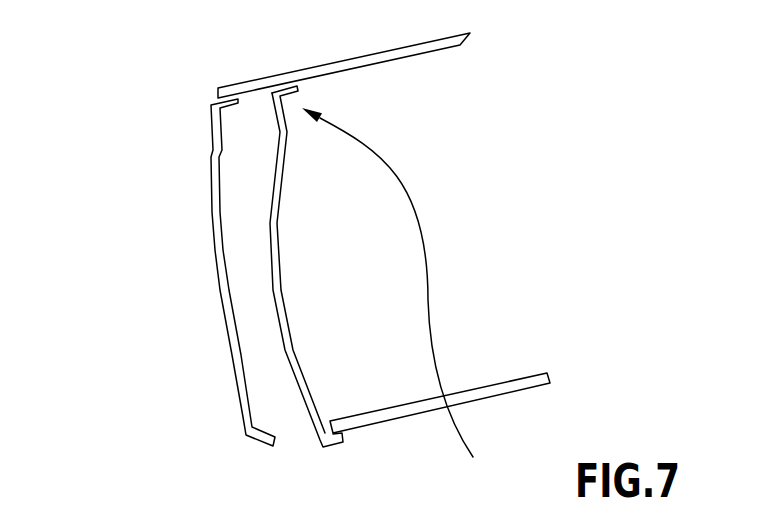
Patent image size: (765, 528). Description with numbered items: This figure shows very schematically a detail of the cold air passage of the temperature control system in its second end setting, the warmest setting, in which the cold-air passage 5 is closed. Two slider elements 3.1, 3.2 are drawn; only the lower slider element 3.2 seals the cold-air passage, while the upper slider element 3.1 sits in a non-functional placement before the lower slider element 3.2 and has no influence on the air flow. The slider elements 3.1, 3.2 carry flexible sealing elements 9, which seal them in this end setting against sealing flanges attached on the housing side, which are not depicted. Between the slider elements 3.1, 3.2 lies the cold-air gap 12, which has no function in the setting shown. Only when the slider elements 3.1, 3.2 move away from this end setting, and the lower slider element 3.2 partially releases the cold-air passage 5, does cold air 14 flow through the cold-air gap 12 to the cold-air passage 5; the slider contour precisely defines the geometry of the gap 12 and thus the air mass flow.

The upper slider element 3.1 is at (212, 213).
The lower slider element 3.2 is at (282, 288).
The cold-air passage 5 is at (460, 222).
The flexible sealing elements 9 is at (353, 422).
The cold-air gap 12 is at (248, 319).
The cold air 14 is at (173, 269).